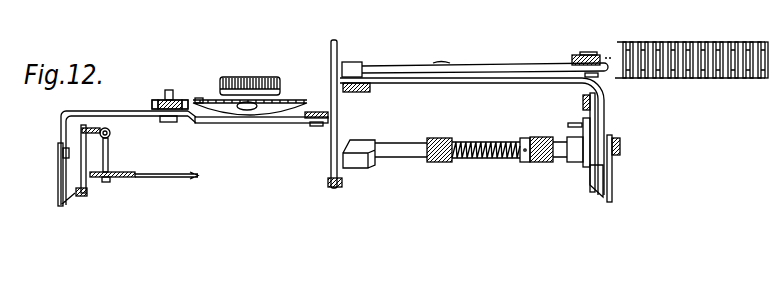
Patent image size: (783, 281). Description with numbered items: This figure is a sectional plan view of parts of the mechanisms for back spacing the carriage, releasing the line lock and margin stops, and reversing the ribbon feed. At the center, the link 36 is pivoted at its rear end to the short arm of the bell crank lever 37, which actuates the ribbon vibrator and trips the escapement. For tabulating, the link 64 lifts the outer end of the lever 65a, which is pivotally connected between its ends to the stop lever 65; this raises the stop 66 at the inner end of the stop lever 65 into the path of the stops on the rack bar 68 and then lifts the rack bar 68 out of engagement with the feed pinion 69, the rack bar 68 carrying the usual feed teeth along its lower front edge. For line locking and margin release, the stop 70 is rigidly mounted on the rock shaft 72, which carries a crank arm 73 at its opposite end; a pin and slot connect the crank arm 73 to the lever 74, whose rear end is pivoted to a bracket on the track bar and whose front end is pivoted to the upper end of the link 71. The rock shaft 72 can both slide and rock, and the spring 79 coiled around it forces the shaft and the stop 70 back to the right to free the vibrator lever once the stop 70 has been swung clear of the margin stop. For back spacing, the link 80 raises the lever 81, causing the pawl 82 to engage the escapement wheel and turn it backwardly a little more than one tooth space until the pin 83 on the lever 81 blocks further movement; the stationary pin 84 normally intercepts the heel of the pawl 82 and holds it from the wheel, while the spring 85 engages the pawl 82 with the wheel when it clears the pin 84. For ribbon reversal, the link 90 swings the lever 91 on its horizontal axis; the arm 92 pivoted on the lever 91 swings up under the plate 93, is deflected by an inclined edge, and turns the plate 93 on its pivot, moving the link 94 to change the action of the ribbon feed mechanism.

The link 36 is at (328, 183).
The bell crank lever 37 is at (330, 148).
The link 64 is at (612, 165).
The stop lever 65 is at (512, 59).
The lever 65a is at (648, 108).
The stop 66 is at (355, 63).
The rack bar 68 is at (727, 41).
The feed pinion 69 is at (262, 78).
The line locking and margin release stop 70 is at (362, 165).
The link 71 is at (589, 194).
The rock shaft 72 is at (410, 135).
The crank arm 73 is at (580, 133).
The lever 74 is at (596, 117).
The spring 79 is at (483, 143).
The link 80 is at (57, 168).
The lever 81 is at (123, 113).
The pawl 82 is at (183, 99).
The pin 83 is at (207, 122).
The stationary pin 84 is at (177, 85).
The spring 85 is at (162, 100).
The link 90 is at (74, 195).
The lever 91 is at (111, 136).
The arm 92 is at (108, 156).
The plate 93 is at (133, 177).
The link 94 is at (190, 182).